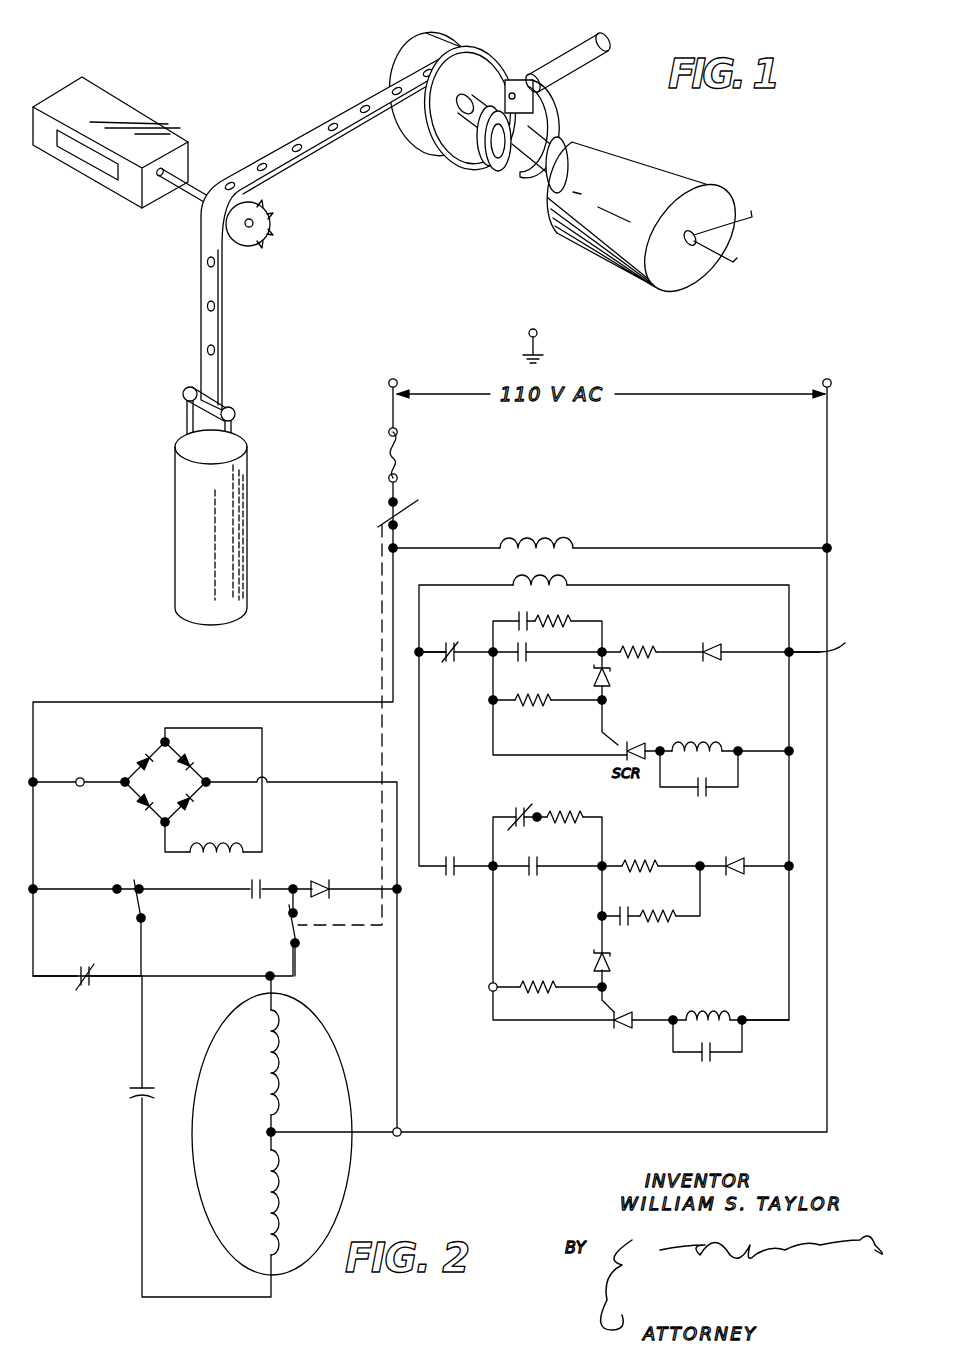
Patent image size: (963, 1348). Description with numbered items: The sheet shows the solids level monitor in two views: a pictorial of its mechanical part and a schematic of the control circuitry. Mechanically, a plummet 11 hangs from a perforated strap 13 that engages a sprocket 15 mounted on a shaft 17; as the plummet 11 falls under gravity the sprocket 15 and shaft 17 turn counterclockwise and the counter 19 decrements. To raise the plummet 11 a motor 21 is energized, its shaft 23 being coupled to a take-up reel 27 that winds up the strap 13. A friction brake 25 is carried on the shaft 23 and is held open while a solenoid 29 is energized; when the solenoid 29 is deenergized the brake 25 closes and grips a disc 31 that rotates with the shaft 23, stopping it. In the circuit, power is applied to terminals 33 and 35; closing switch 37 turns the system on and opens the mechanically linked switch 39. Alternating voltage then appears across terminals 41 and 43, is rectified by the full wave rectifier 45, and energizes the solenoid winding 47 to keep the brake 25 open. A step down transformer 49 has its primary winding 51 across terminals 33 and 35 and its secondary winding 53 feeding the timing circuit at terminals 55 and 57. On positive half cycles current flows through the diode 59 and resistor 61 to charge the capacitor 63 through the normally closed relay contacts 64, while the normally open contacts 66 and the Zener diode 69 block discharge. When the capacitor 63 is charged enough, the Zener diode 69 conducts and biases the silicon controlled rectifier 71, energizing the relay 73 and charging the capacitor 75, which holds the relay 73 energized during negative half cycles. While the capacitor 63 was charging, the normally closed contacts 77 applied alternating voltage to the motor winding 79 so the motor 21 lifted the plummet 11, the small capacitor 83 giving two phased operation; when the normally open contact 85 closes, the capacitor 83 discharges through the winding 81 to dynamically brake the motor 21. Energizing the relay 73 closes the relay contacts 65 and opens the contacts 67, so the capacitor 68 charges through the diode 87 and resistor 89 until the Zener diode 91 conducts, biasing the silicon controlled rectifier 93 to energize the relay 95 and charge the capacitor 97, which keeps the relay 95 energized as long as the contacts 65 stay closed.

In FIG. 1, the plummet 11 is at (225, 513).
In FIG. 1, the perforated strap 13 is at (212, 335).
In FIG. 1, the sprocket 15 is at (258, 224).
In FIG. 1, the shaft 17 is at (203, 192).
In FIG. 1, the counter 19 is at (152, 125).
In FIG. 1, the motor 21 is at (680, 175).
In FIG. 2, the motor 21 is at (293, 1134).
In FIG. 1, the shaft 23 is at (545, 145).
In FIG. 1, the friction brake 25 is at (482, 166).
In FIG. 1, the take-up reel 27 is at (373, 214).
In FIG. 1, the solenoid 29 is at (604, 52).
In FIG. 1, the disc 31 is at (520, 185).
In FIG. 2, the terminal 33 is at (395, 380).
In FIG. 2, the terminal 35 is at (828, 380).
In FIG. 2, the switch 37 is at (415, 512).
In FIG. 2, the switch 39 is at (292, 937).
In FIG. 2, the terminal 41 is at (81, 778).
In FIG. 2, the terminal 43 is at (400, 1130).
In FIG. 2, the full wave rectifier 45 is at (182, 794).
In FIG. 2, the solenoid winding 47 is at (208, 848).
In FIG. 2, the transformer 49 is at (526, 582).
In FIG. 2, the primary winding 51 is at (550, 542).
In FIG. 2, the secondary winding 53 is at (575, 592).
In FIG. 2, the terminal 55 is at (818, 638).
In FIG. 2, the terminal 57 is at (426, 642).
In FIG. 2, the diode 59 is at (722, 660).
In FIG. 2, the resistor 61 is at (653, 635).
In FIG. 2, the capacitor 63 is at (522, 660).
In FIG. 2, the normally closed relay contacts 64 is at (460, 662).
In FIG. 2, the relay contacts 65 is at (462, 875).
In FIG. 2, the normally open relay contacts 66 is at (527, 628).
In FIG. 2, the relay contacts 67 is at (518, 810).
In FIG. 2, the capacitor 68 is at (540, 878).
In FIG. 2, the Zener diode 69 is at (610, 678).
In FIG. 2, the silicon controlled rectifier 71 is at (650, 745).
In FIG. 2, the relay 73 is at (697, 742).
In FIG. 2, the capacitor 75 is at (703, 798).
In FIG. 2, the normally closed relay contacts 77 is at (95, 986).
In FIG. 2, the motor winding 79 is at (278, 1082).
In FIG. 2, the winding 81 is at (277, 1214).
In FIG. 2, the capacitor 83 is at (133, 1090).
In FIG. 2, the normally open relay contact 85 is at (262, 878).
In FIG. 2, the diode 87 is at (748, 872).
In FIG. 2, the resistor 89 is at (655, 858).
In FIG. 2, the Zener diode 91 is at (612, 957).
In FIG. 2, the silicon controlled rectifier 93 is at (634, 1026).
In FIG. 2, the relay 95 is at (712, 1012).
In FIG. 2, the capacitor 97 is at (708, 1060).